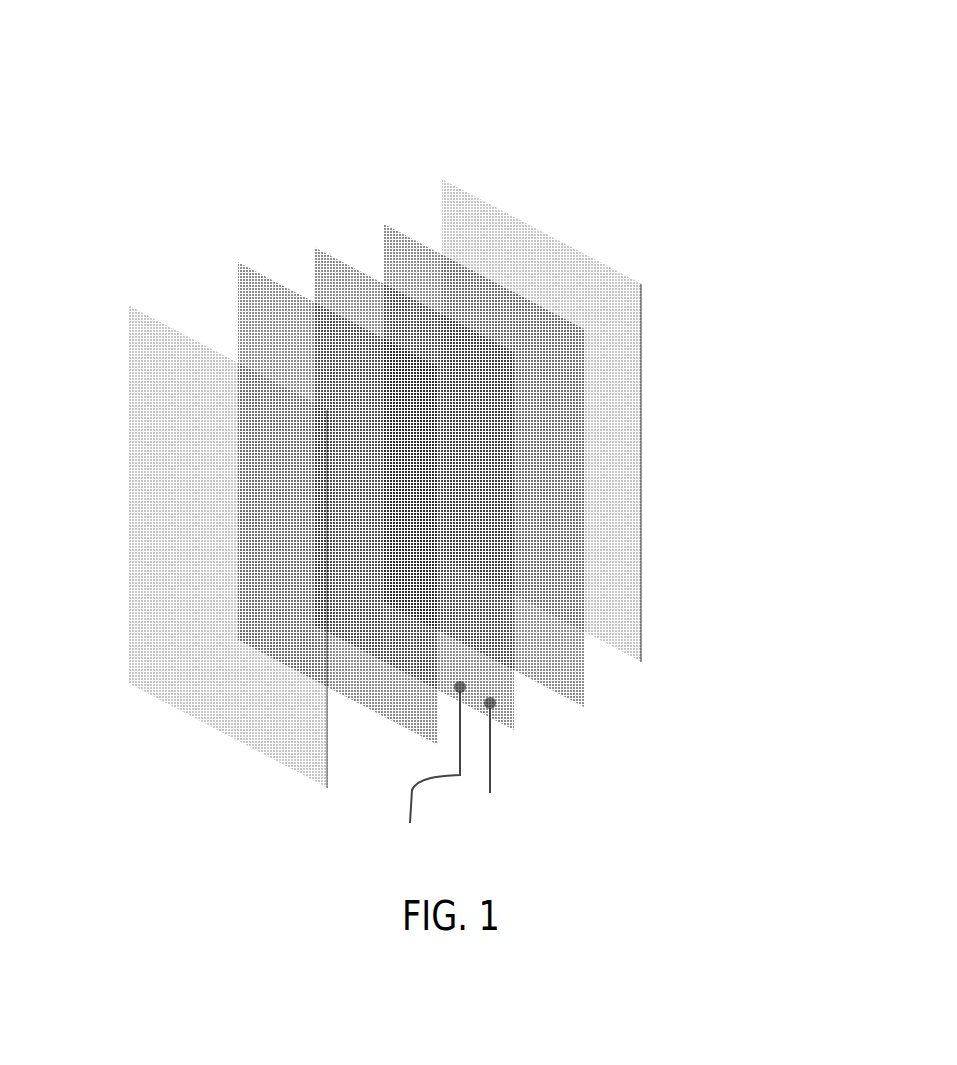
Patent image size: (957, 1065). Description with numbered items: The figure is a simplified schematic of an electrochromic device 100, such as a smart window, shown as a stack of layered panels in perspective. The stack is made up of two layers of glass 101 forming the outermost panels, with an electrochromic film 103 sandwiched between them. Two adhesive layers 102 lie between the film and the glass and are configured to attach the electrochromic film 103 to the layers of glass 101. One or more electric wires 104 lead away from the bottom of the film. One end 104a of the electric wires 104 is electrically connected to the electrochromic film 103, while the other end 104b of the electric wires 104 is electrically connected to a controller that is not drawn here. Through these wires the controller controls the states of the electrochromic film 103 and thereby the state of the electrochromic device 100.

The electrochromic device 100 is at (479, 44).
The glass 101 is at (100, 716).
The adhesive layer 102 is at (370, 218).
The electrochromic film 103 is at (510, 713).
The electric wire 104 is at (597, 711).
The end of the electric wire 104a is at (492, 702).
The other end of the electric wire 104b is at (408, 779).